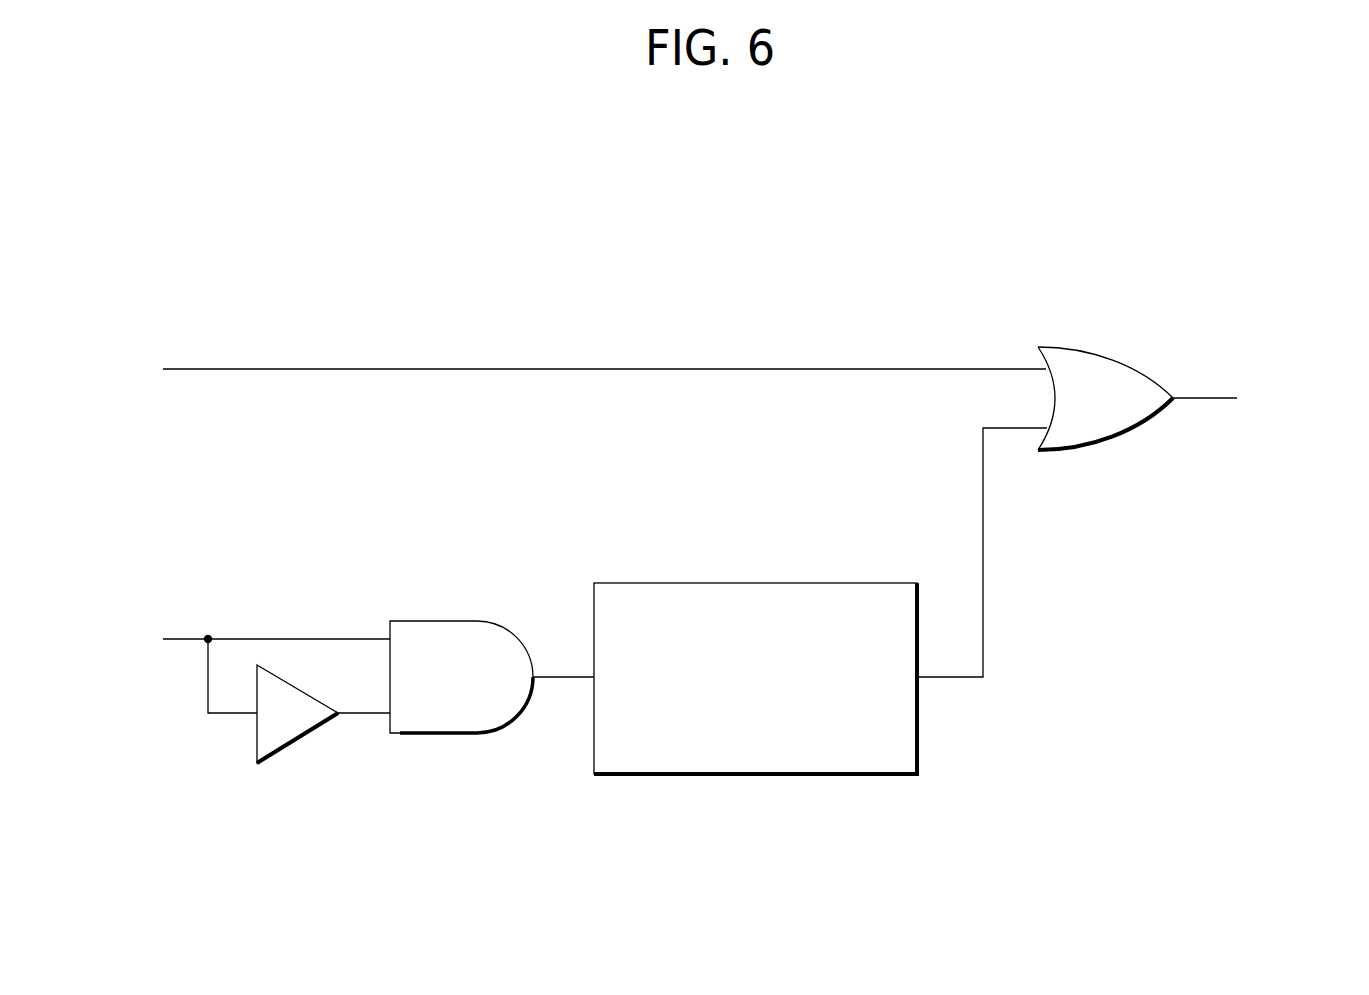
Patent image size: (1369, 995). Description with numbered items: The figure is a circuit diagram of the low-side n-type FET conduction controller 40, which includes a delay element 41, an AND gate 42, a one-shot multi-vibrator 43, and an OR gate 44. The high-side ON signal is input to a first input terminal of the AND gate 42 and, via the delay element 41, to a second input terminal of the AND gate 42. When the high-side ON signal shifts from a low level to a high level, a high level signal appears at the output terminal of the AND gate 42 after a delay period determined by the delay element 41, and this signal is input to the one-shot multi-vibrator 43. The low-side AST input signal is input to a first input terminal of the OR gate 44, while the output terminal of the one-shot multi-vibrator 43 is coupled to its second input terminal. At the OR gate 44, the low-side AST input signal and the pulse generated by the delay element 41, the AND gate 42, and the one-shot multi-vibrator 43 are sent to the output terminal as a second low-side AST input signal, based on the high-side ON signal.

The low-side n-type FET conduction controller 40 is at (707, 270).
The delay element 41 is at (305, 736).
The AND gate 42 is at (450, 734).
The one-shot multi-vibrator 43 is at (823, 775).
The OR gate 44 is at (1142, 438).